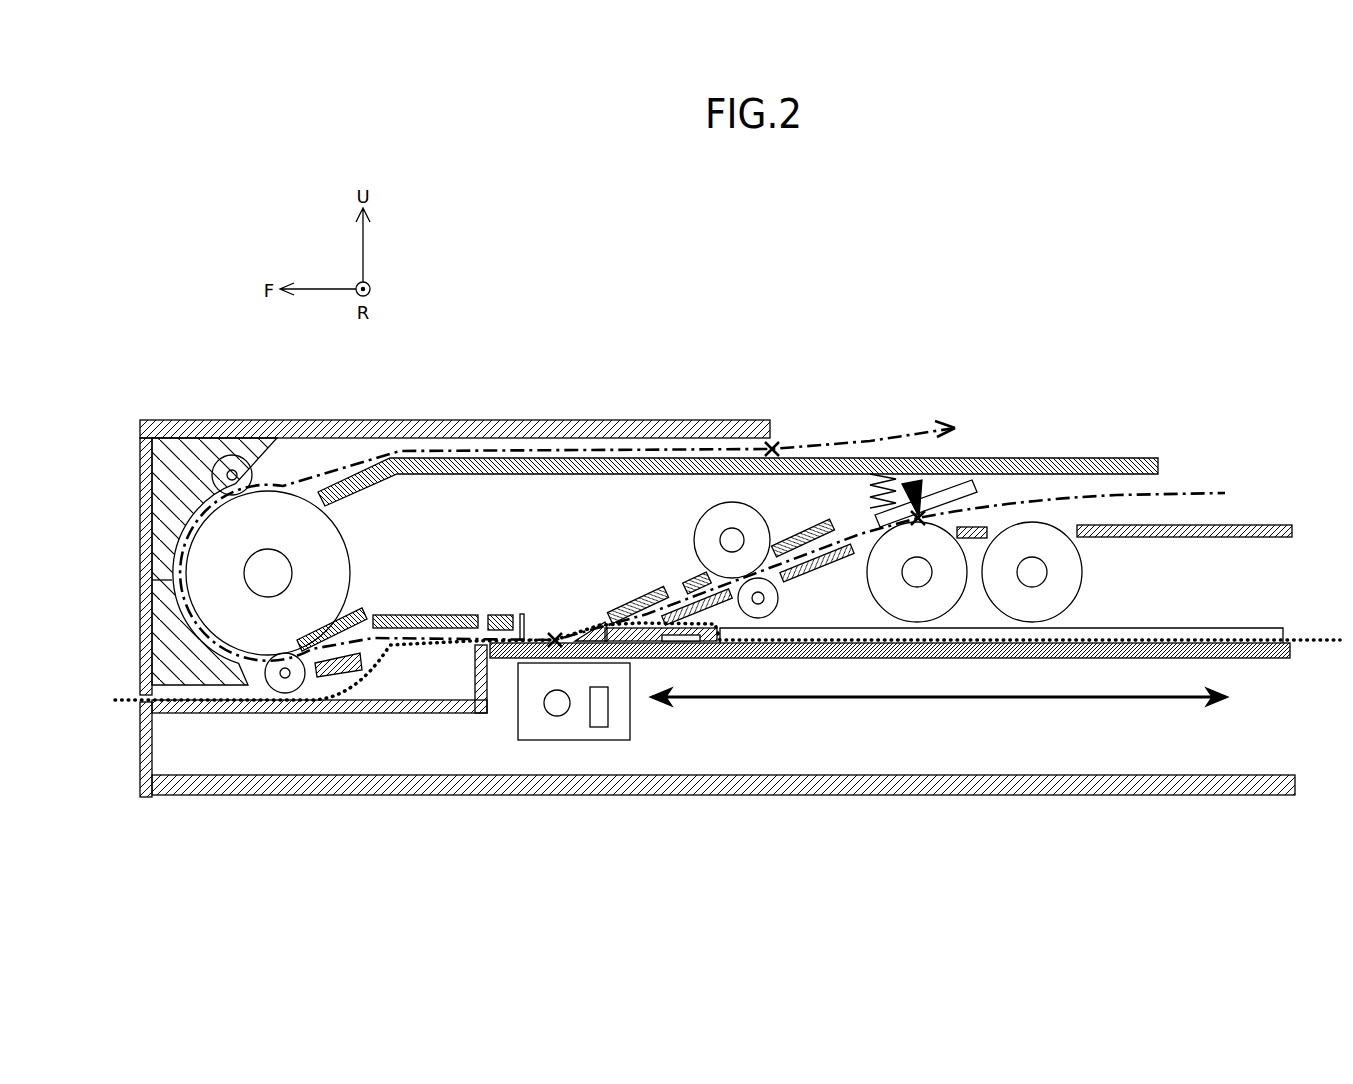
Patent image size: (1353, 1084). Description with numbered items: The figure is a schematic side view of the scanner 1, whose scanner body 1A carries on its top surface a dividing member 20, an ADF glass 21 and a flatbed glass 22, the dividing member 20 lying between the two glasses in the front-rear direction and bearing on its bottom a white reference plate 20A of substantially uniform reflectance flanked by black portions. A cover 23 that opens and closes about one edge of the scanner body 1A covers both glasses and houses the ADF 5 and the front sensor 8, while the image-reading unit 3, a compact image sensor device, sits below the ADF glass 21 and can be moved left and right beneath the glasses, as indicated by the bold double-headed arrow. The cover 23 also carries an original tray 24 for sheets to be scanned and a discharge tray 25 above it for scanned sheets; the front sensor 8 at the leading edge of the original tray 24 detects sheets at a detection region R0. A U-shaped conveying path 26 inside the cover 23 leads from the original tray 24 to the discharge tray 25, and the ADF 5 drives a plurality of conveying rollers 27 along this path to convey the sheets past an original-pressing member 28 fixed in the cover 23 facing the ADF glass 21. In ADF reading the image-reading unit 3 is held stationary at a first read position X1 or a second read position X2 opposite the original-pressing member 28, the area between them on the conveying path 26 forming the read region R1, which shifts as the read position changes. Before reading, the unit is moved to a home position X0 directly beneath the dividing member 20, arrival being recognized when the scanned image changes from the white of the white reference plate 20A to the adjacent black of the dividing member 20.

The scanner 1 is at (661, 290).
The scanner body 1A is at (117, 756).
The image-reading unit 3 is at (533, 740).
The ADF 5 is at (153, 509).
The front sensor 8 is at (913, 483).
The dividing member 20 is at (647, 658).
The white reference plate 20A is at (682, 653).
The ADF glass 21 is at (503, 657).
The flatbed glass 22 is at (1272, 658).
The cover 23 is at (114, 621).
The original tray 24 is at (1255, 525).
The discharge tray 25 is at (1050, 457).
The conveying path 26 is at (563, 450).
The conveying rollers 27 is at (238, 465).
The original-pressing member 28 is at (592, 630).
The detection region R0 is at (916, 522).
The read region R1 is at (553, 636).
The home position X0 is at (683, 720).
The first read position X1 is at (557, 728).
The second read position X2 is at (600, 735).